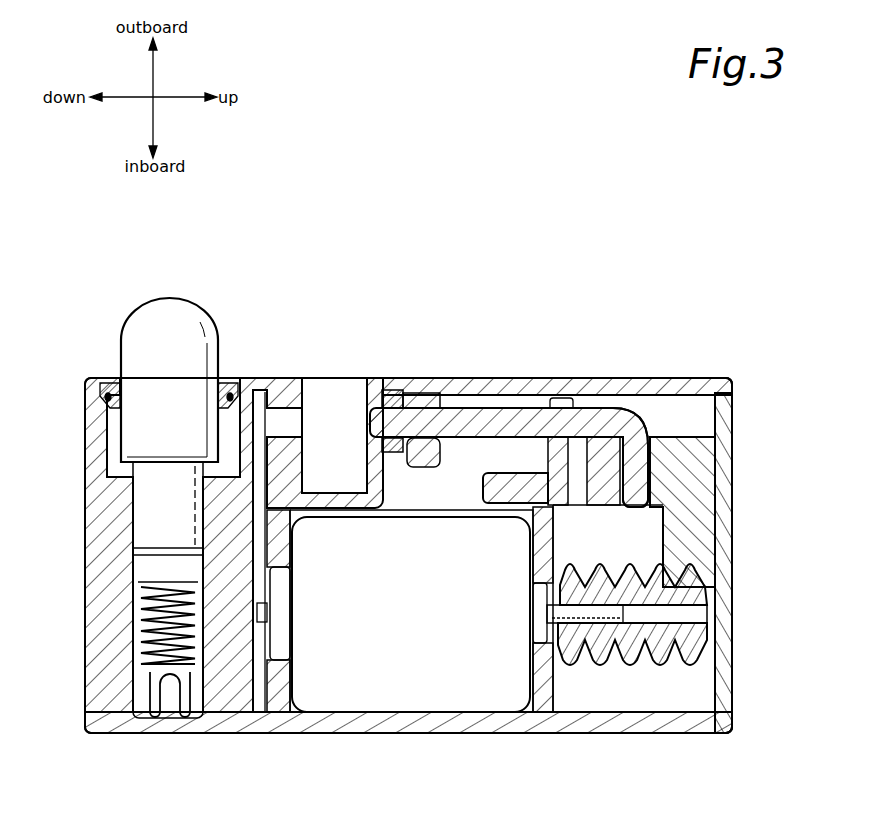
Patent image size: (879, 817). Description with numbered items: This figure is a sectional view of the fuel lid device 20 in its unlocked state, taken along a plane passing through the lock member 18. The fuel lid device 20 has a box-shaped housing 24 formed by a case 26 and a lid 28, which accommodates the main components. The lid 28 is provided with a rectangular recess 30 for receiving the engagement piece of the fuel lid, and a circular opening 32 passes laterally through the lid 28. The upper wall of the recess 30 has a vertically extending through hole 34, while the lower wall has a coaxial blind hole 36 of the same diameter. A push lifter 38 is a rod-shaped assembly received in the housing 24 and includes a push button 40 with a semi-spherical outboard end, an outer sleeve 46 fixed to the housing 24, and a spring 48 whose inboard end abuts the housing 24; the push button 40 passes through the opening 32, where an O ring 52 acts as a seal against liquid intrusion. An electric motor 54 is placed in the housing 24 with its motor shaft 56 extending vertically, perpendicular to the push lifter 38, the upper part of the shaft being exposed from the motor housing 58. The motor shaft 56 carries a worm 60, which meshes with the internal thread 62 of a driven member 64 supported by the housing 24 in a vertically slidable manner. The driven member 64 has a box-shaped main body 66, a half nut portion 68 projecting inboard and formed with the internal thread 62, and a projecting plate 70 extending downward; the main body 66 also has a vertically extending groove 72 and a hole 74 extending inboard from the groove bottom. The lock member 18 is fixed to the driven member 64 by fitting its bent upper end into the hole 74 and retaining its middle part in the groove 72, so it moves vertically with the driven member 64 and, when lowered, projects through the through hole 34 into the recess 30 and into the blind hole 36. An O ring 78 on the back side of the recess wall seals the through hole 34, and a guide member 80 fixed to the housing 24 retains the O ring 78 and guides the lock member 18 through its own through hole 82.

The lock member 18 is at (503, 415).
The fuel lid device 20 is at (596, 241).
The housing 24 is at (785, 380).
The case 26 is at (722, 447).
The lid 28 is at (735, 385).
The recess 30 is at (314, 400).
The circular opening 32 is at (115, 380).
The through hole 34 is at (355, 410).
The blind hole 36 is at (270, 398).
The push lifter 38 is at (134, 309).
The push button 40 is at (186, 312).
The outer sleeve 46 is at (140, 522).
The spring 48 is at (150, 628).
The O ring 52 is at (95, 402).
The electric motor 54 is at (366, 714).
The motor shaft 56 is at (588, 617).
The motor housing 58 is at (450, 690).
The worm 60 is at (660, 652).
The internal thread 62 is at (710, 578).
The driven member 64 is at (698, 386).
The main body 66 is at (690, 483).
The half nut portion 68 is at (718, 532).
The projecting plate 70 is at (481, 492).
The groove 72 is at (660, 410).
The hole 74 is at (622, 440).
The O ring 78 is at (385, 393).
The guide member 80 is at (412, 410).
The through hole 82 is at (447, 405).